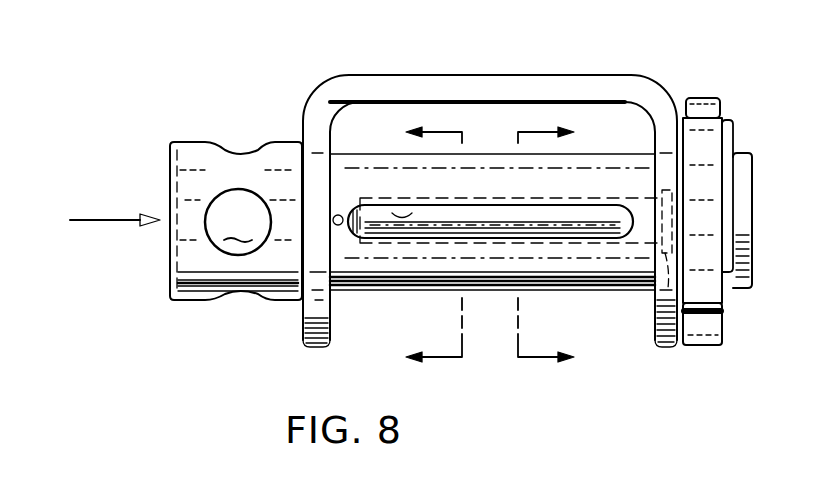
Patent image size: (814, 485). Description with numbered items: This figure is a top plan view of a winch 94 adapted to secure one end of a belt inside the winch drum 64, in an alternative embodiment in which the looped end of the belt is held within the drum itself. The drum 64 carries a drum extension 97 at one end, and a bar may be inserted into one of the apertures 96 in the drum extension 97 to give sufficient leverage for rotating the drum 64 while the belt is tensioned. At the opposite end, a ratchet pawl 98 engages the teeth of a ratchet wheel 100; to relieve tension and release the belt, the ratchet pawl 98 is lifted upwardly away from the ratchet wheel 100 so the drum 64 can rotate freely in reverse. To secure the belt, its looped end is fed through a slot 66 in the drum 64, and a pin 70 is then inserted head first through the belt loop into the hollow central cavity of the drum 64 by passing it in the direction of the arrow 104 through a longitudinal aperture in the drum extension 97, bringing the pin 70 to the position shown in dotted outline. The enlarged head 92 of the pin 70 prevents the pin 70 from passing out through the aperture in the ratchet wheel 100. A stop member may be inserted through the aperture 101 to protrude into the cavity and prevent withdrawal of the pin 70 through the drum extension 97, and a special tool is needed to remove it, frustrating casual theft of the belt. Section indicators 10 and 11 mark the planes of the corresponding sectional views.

The winch 94 is at (298, 82).
The winch drum 64 is at (483, 153).
The slot 66 is at (410, 212).
The pin 70 is at (512, 224).
The drum extension 97 is at (170, 166).
The aperture 96 is at (232, 144).
The arrow 104 is at (88, 222).
The aperture 101 is at (340, 226).
The enlarged head 92 is at (666, 282).
The ratchet pawl 98 is at (712, 290).
The ratchet wheel 100 is at (720, 345).
The section line 11 is at (422, 245).
The section line 10 is at (565, 246).